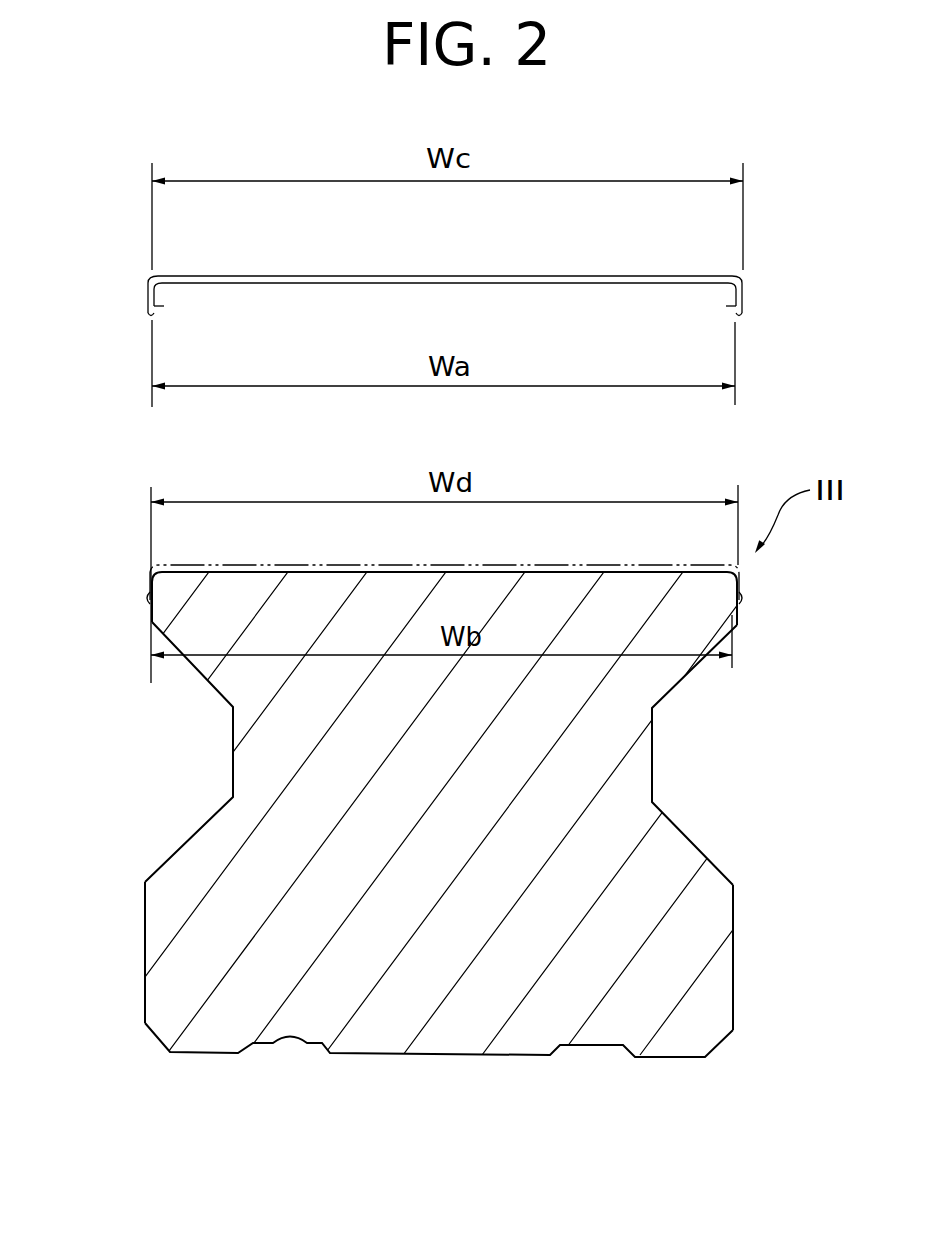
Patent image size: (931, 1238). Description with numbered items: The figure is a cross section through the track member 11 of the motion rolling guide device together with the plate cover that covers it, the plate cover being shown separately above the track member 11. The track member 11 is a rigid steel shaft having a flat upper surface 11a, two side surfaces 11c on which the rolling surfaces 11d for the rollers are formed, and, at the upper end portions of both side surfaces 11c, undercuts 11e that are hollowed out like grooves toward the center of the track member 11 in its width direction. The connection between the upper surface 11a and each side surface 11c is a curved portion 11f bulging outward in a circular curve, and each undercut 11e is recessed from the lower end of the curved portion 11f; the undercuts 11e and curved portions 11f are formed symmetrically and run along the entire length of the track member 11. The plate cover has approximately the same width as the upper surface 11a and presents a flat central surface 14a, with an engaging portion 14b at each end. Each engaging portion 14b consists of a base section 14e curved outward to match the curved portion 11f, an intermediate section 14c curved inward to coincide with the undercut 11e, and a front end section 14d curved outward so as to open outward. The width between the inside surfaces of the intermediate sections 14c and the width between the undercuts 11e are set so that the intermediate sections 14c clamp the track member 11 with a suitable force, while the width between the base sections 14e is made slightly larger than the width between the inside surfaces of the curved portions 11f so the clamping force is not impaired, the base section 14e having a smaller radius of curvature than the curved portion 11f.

The track member 11 is at (448, 289).
The upper surface 11a is at (621, 571).
The side surface 11c is at (145, 953).
The rolling surface 11d is at (205, 680).
The undercut 11e is at (146, 599).
The curved portion 11f is at (150, 577).
The flat central surface 14a is at (600, 283).
The engaging portion 14b is at (130, 300).
The intermediate section 14c is at (162, 305).
The front end section 14d is at (149, 318).
The base section 14e is at (148, 283).